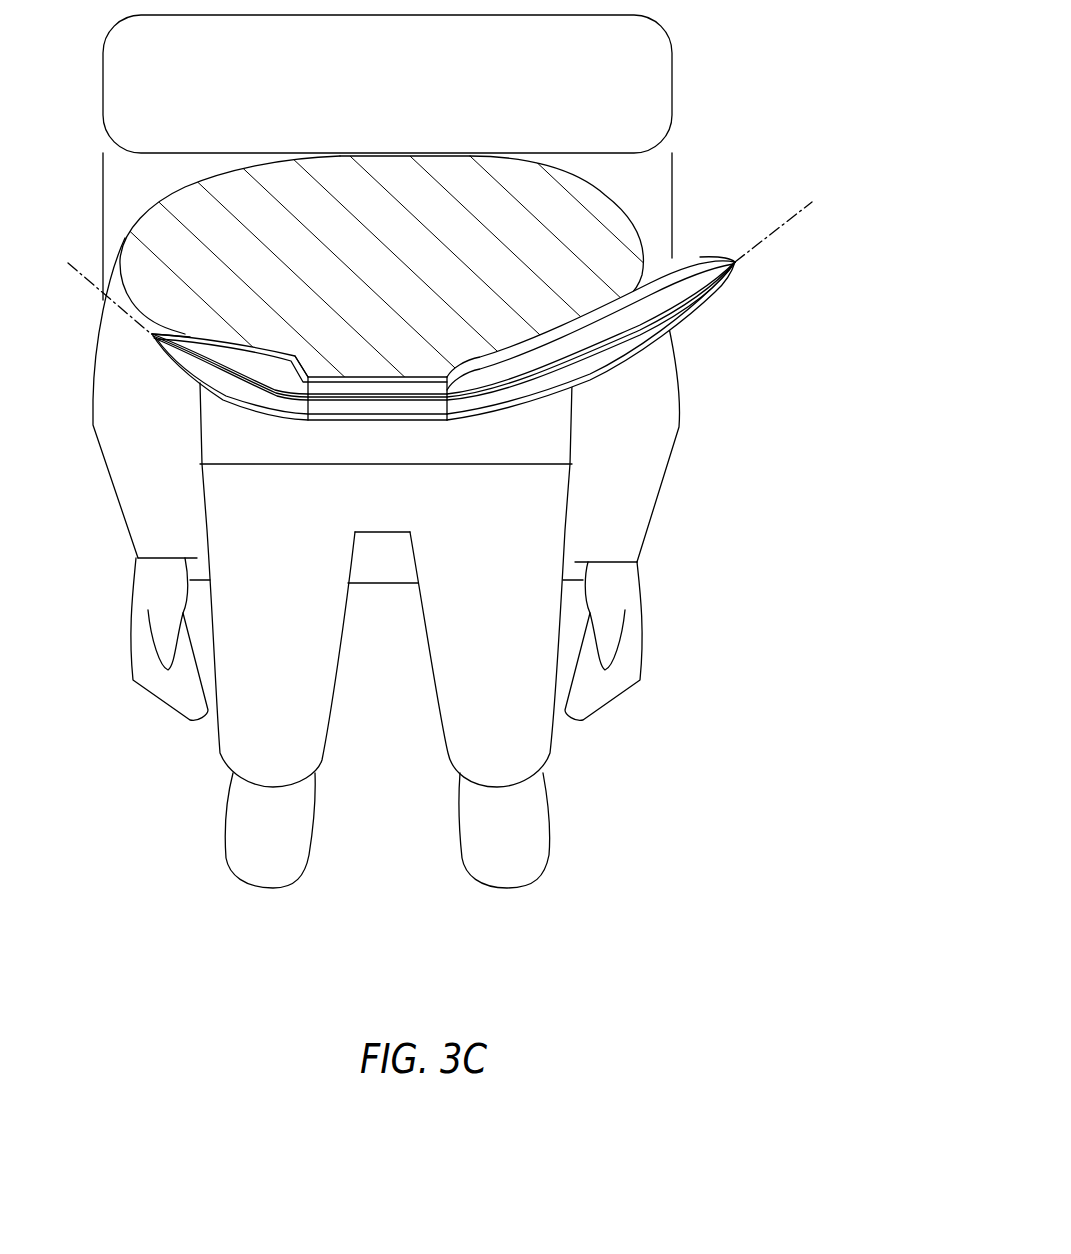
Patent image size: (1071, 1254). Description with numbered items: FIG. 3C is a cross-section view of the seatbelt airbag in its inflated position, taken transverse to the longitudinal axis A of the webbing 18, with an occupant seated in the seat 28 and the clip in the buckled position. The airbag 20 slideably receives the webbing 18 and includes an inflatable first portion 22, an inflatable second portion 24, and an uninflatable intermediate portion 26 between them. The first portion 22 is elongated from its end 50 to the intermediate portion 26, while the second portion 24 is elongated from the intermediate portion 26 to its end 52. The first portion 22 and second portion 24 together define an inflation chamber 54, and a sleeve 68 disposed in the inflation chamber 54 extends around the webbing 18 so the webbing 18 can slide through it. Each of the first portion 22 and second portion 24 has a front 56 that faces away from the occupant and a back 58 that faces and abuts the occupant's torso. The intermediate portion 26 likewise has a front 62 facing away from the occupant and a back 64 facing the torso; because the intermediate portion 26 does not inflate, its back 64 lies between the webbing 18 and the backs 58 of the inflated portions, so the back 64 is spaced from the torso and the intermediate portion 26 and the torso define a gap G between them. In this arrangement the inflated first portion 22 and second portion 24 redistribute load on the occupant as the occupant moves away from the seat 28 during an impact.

The webbing 18 is at (622, 325).
The airbag 20 is at (736, 282).
The first portion 22 is at (692, 258).
The second portion 24 is at (180, 382).
The intermediate portion 26 is at (358, 428).
The seat 28 is at (677, 70).
The end 50 is at (737, 263).
The end 52 is at (150, 335).
The inflation chamber 54 is at (541, 350).
The front 56 is at (240, 406).
The back 58 is at (242, 337).
The front 62 is at (414, 421).
The back 64 is at (387, 378).
The sleeve 68 is at (636, 307).
The gap G is at (348, 367).
The longitudinal axis A is at (439, 257).